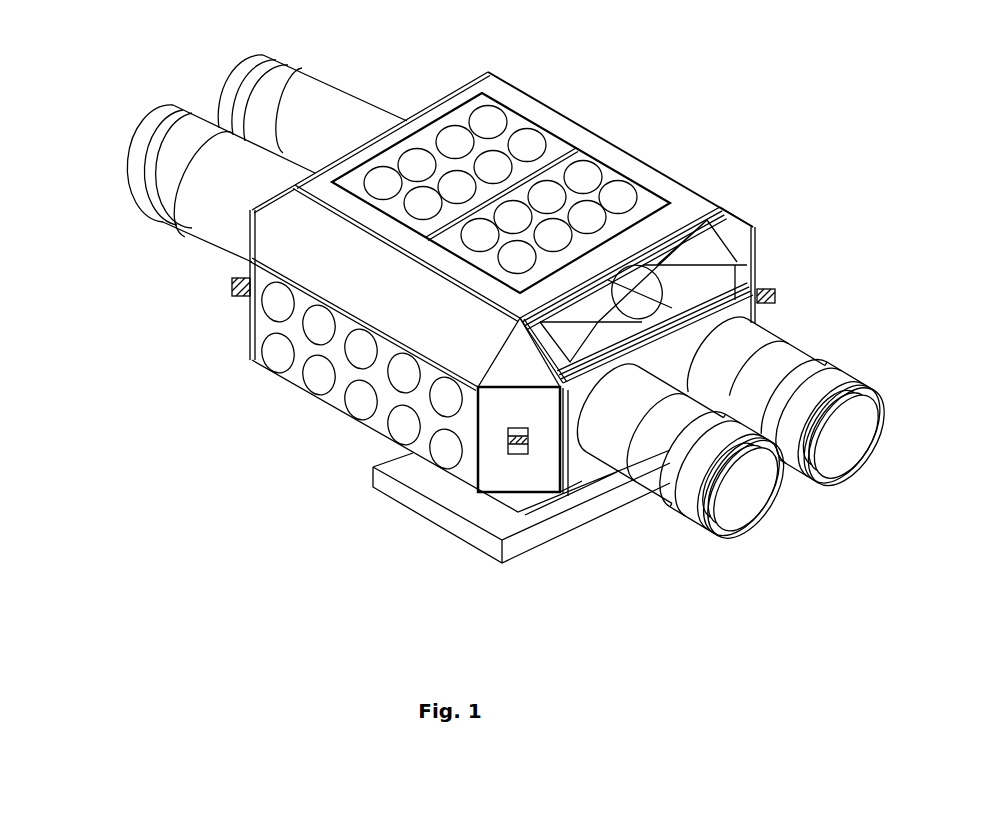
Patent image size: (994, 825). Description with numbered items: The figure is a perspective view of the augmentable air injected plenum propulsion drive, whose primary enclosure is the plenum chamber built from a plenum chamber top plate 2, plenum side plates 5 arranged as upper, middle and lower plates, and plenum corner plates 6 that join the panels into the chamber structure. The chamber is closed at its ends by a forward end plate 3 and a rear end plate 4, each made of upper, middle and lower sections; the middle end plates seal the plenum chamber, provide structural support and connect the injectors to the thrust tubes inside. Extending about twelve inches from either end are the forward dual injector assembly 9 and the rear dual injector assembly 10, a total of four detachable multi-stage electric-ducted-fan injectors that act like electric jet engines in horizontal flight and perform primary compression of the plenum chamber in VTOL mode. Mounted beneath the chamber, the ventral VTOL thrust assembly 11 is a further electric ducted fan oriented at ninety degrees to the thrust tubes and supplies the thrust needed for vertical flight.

The plenum chamber top plate 2 is at (633, 223).
The forward end plate 3 is at (575, 395).
The rear end plate 4 is at (243, 325).
The plenum side plates 5 is at (400, 438).
The plenum corner plates 6 is at (495, 467).
The forward dual injector assembly 9 is at (640, 403).
The rear dual injector assembly 10 is at (200, 162).
The ventral VTOL thrust assembly 11 is at (438, 485).